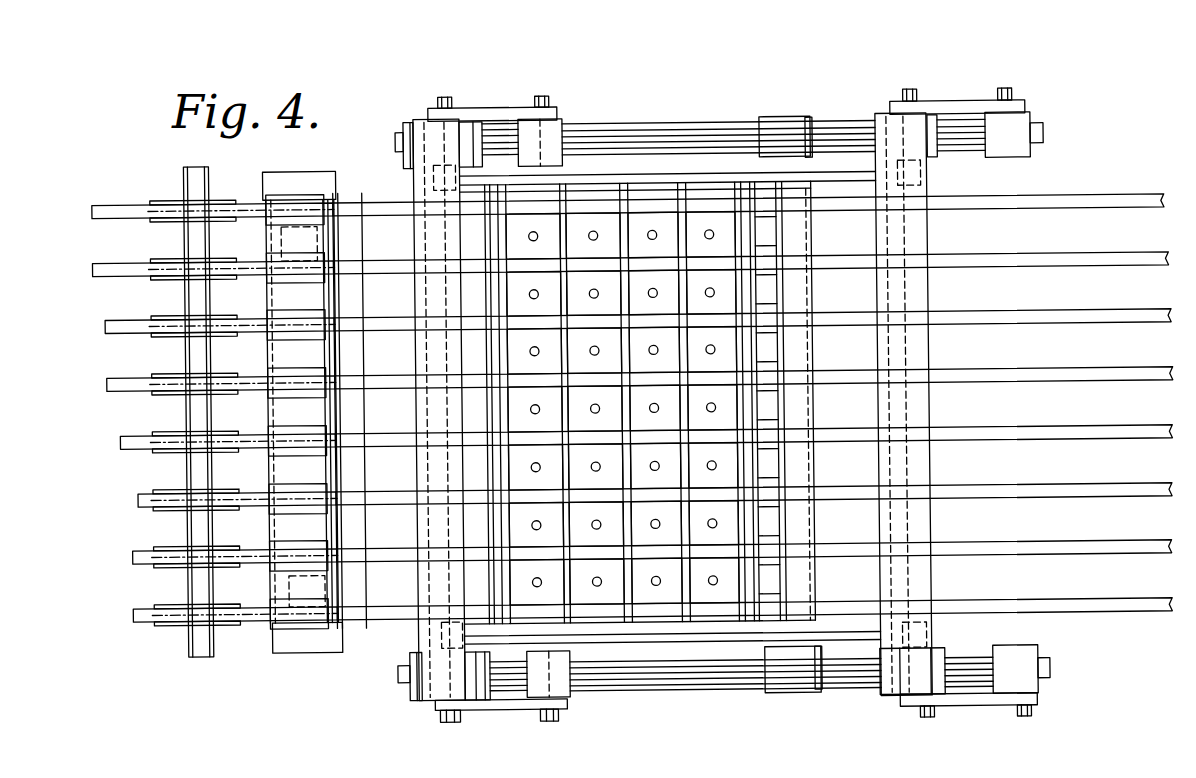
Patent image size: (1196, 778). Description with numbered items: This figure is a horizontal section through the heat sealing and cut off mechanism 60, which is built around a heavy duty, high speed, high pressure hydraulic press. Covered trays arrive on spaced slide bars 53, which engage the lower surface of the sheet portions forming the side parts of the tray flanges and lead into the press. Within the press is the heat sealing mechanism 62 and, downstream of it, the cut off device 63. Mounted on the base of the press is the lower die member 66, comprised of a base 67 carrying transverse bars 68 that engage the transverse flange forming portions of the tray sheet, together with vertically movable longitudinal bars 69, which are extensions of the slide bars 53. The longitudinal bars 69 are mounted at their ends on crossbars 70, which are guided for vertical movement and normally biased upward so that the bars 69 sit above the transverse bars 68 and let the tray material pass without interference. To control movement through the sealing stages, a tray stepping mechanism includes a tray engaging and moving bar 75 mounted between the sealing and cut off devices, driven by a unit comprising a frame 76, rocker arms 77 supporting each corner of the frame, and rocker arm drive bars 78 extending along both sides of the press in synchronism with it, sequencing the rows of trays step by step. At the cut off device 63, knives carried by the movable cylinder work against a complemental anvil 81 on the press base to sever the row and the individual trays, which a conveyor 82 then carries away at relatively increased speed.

The slide bars 53 is at (1042, 198).
The heat sealing and cut off mechanism 60 is at (878, 96).
The heat sealing mechanism 62 is at (657, 184).
The cut off device 63 is at (327, 164).
The lower die member 66 is at (600, 612).
The base 67 is at (657, 596).
The transverse bars 68 is at (682, 336).
The longitudinal bars 69 is at (607, 268).
The crossbars 70 is at (358, 611).
The tray engaging and moving bar 75 is at (418, 242).
The frame 76 is at (742, 176).
The rocker arms 77 is at (436, 178).
The rocker arm drive bars 78 is at (796, 133).
The anvil 81 is at (304, 645).
The conveyor 82 is at (118, 218).